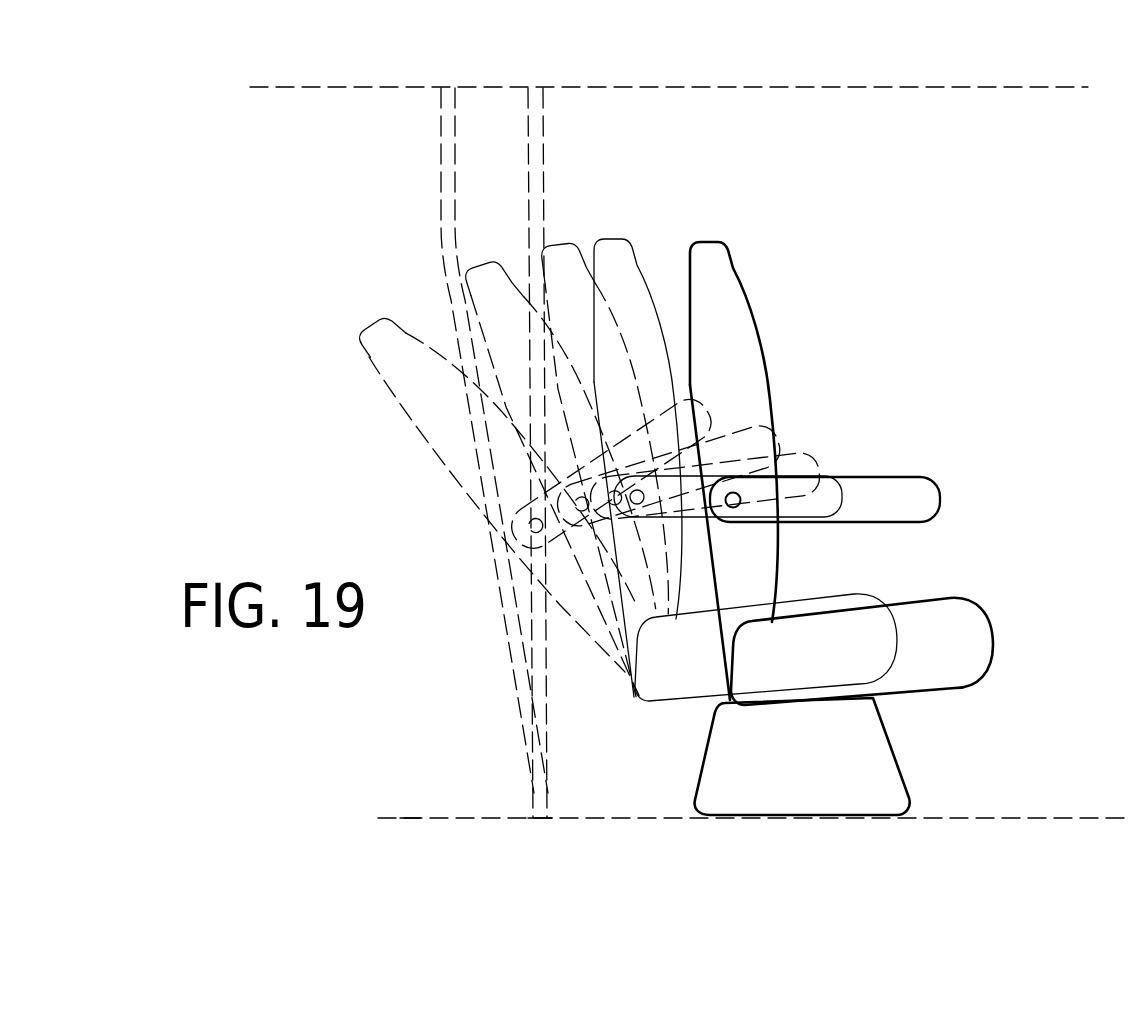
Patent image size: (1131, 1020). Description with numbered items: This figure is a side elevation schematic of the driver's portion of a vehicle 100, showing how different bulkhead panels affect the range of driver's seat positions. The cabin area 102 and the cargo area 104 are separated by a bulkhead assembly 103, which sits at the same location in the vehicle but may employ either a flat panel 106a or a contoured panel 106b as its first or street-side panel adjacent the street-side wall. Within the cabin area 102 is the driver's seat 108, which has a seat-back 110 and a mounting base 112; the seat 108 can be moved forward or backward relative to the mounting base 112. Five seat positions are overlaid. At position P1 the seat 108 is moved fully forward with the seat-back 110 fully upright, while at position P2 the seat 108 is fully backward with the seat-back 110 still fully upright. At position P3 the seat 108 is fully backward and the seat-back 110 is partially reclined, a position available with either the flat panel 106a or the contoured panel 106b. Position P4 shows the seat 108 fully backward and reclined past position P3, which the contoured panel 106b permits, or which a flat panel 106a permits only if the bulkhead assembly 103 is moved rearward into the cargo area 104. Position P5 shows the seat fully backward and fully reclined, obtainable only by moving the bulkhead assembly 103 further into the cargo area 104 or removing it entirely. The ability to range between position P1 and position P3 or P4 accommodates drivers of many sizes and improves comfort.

The vehicle 100 is at (893, 80).
The cabin area 102 is at (1012, 820).
The bulkhead assembly 103 is at (543, 825).
The cargo area 104 is at (410, 818).
The flat panel 106a is at (546, 155).
The contoured panel 106b is at (441, 152).
The driver's seat 108 is at (997, 612).
The seat-back 110 is at (766, 362).
The mounting base 112 is at (905, 780).
The position P1 is at (727, 248).
The position P2 is at (616, 237).
The position P3 is at (553, 245).
The position P4 is at (482, 266).
The position P5 is at (370, 326).